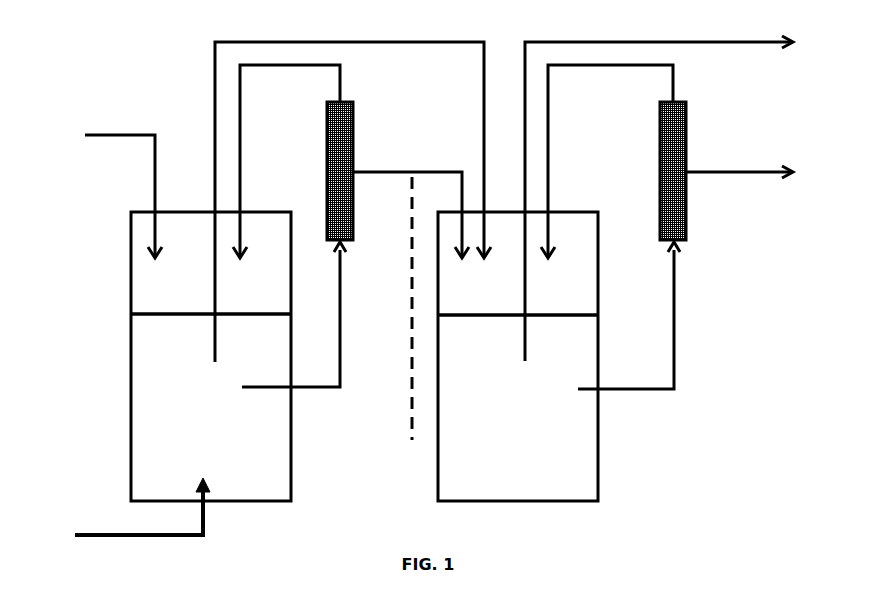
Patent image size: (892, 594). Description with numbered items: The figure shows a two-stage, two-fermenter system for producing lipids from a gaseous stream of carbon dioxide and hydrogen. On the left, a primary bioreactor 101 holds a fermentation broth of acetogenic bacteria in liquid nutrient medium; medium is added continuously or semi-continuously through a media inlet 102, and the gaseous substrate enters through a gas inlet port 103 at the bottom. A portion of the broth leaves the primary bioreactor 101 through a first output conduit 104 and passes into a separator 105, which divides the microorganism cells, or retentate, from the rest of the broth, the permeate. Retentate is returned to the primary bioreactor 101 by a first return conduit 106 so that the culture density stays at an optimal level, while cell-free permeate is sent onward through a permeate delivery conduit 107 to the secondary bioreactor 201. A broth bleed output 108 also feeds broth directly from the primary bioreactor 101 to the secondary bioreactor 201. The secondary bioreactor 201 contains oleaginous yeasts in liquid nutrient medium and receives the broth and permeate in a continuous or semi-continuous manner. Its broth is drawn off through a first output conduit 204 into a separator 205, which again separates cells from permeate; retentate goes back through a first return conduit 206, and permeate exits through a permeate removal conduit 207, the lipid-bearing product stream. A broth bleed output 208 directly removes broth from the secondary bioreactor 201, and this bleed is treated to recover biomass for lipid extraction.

The primary bioreactor 101 is at (174, 356).
The media inlet 102 is at (119, 181).
The gas inlet port 103 is at (136, 527).
The first output conduit 104 is at (314, 314).
The separator 105 is at (382, 321).
The first return conduit 106 is at (293, 161).
The permeate delivery conduit 107 is at (411, 196).
The broth bleed output 108 is at (353, 186).
The secondary bioreactor 201 is at (546, 358).
The first output conduit 204 is at (632, 336).
The separator 205 is at (702, 171).
The first return conduit 206 is at (607, 161).
The permeate removal conduit 207 is at (739, 139).
The broth bleed output 208 is at (659, 188).